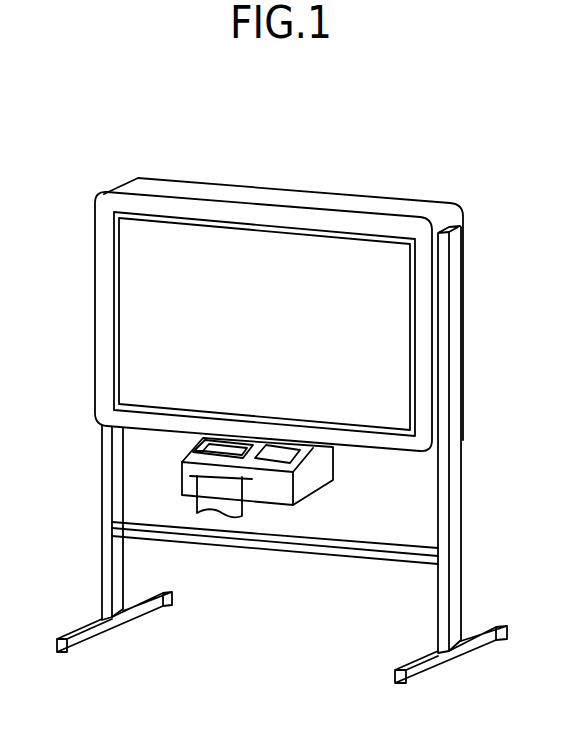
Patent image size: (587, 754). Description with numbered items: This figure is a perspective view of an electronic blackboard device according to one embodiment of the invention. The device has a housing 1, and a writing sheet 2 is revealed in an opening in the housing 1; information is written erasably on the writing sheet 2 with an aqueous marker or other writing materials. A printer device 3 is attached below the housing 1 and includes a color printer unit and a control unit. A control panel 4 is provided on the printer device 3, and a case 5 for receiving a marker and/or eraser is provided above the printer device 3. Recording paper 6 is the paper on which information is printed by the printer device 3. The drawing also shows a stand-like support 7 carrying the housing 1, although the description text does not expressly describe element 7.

The housing 1 is at (345, 197).
The writing sheet 2 is at (142, 272).
The printer device 3 is at (320, 463).
The control panel 4 is at (282, 456).
The case 5 is at (197, 450).
The recording paper 6 is at (218, 503).
The stand 7 is at (457, 518).